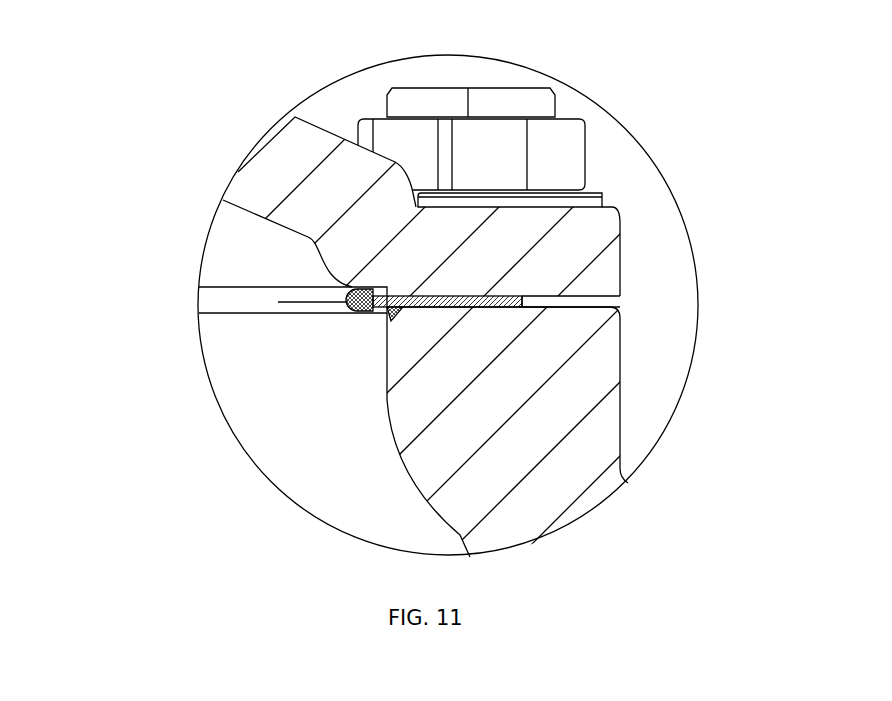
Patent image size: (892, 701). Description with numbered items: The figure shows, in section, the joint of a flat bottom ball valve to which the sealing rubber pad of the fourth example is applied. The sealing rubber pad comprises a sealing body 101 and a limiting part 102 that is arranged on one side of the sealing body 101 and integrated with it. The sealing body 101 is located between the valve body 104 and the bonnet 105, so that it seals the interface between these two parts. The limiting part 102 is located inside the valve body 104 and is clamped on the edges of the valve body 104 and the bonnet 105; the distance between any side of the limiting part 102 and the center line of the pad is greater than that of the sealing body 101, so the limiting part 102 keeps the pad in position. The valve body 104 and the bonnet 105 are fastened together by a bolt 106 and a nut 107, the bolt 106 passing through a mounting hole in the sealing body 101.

The sealing body 101 is at (388, 312).
The limiting part 102 is at (348, 313).
The valve body 104 is at (562, 410).
The bonnet 105 is at (562, 256).
The bolt 106 is at (532, 103).
The nut 107 is at (560, 158).